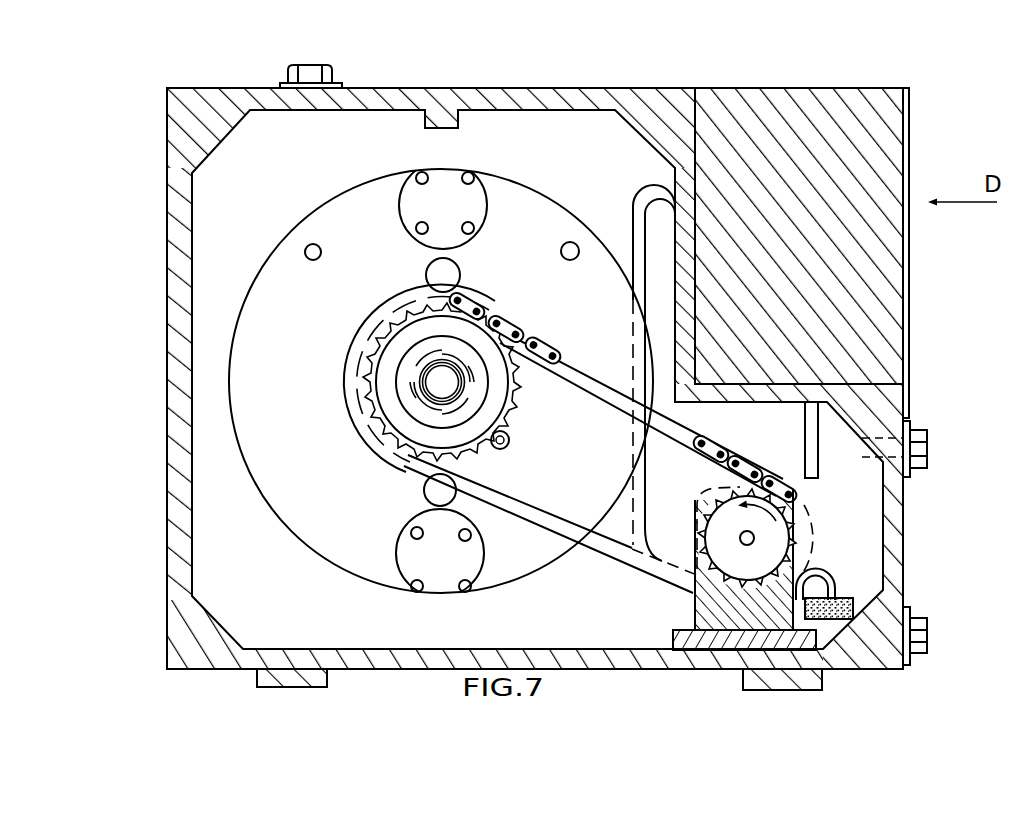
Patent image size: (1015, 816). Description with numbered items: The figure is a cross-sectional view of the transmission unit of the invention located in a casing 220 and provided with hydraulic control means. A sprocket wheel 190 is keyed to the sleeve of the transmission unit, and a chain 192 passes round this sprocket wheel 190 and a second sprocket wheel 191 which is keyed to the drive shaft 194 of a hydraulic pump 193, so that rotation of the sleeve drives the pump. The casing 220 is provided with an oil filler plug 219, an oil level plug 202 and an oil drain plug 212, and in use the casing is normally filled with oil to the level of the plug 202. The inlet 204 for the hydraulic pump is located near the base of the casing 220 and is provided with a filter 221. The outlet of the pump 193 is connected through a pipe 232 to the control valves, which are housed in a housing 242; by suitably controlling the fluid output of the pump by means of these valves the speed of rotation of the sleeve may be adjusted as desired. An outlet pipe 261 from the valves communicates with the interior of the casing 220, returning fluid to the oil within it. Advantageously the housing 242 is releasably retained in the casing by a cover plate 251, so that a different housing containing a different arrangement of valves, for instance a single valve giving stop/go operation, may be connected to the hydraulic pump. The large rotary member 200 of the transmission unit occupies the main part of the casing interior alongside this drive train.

The sprocket wheel 190 is at (492, 402).
The sprocket wheel 191 is at (795, 518).
The chain 192 is at (570, 360).
The hydraulic pump 193 is at (694, 499).
The drive shaft 194 is at (742, 537).
The rotary disk 200 is at (330, 578).
The oil level plug 202 is at (927, 450).
The inlet 204 is at (822, 570).
The oil drain plug 212 is at (927, 637).
The oil filler plug 219 is at (324, 73).
The casing 220 is at (164, 262).
The filter screen 221 is at (843, 598).
The pipe 232 is at (652, 202).
The housing 242 is at (855, 270).
The cover plate 251 is at (909, 333).
The outlet pipe 261 is at (818, 440).